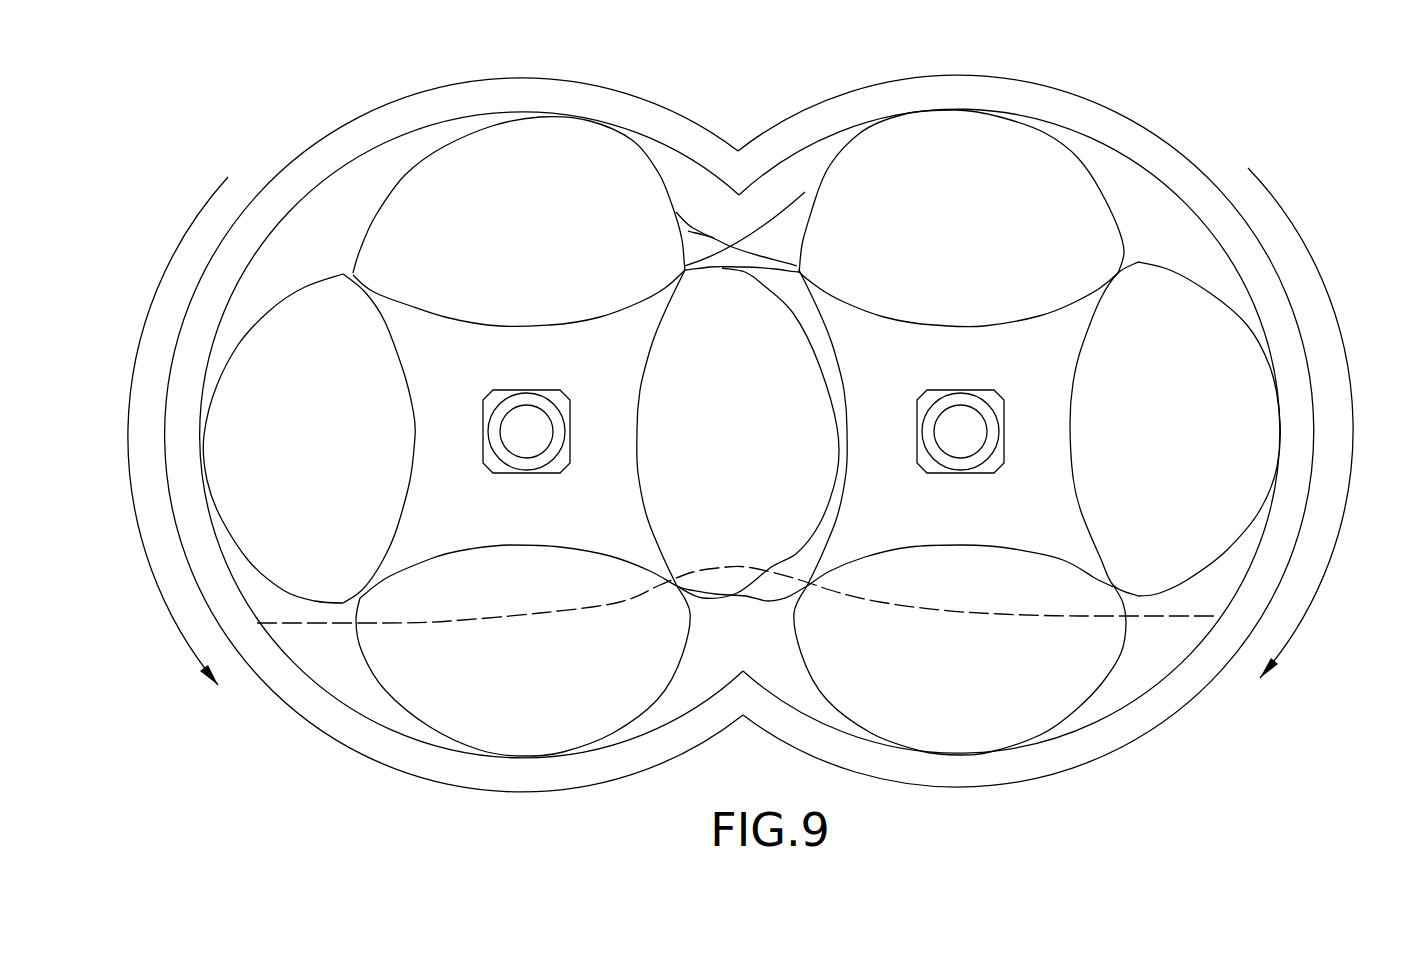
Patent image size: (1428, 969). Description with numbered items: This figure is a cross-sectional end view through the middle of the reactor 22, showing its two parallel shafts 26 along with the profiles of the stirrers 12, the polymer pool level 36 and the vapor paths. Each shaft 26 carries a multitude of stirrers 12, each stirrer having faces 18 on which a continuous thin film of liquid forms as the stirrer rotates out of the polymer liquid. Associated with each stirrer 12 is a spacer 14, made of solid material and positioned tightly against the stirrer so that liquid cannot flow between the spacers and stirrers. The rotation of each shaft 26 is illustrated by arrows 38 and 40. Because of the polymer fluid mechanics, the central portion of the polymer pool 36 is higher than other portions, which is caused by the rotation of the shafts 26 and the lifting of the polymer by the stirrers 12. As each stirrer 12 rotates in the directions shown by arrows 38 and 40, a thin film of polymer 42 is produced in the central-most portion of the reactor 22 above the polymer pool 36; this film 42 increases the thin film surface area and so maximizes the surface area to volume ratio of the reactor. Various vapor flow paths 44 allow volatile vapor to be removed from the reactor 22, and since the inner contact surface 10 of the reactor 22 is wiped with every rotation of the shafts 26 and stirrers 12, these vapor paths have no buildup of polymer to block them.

The interior surface 10 is at (377, 146).
The stirrer 12 is at (332, 268).
The spacer 14 is at (505, 521).
The stirrer face 18 is at (308, 536).
The reactor 22 is at (311, 730).
The shaft 26 is at (513, 443).
The polymer pool level 36 is at (1028, 620).
The arrow 38 is at (128, 416).
The arrow 40 is at (1352, 400).
The thin film of polymer 42 is at (760, 228).
The vapor flow path 44 is at (322, 207).